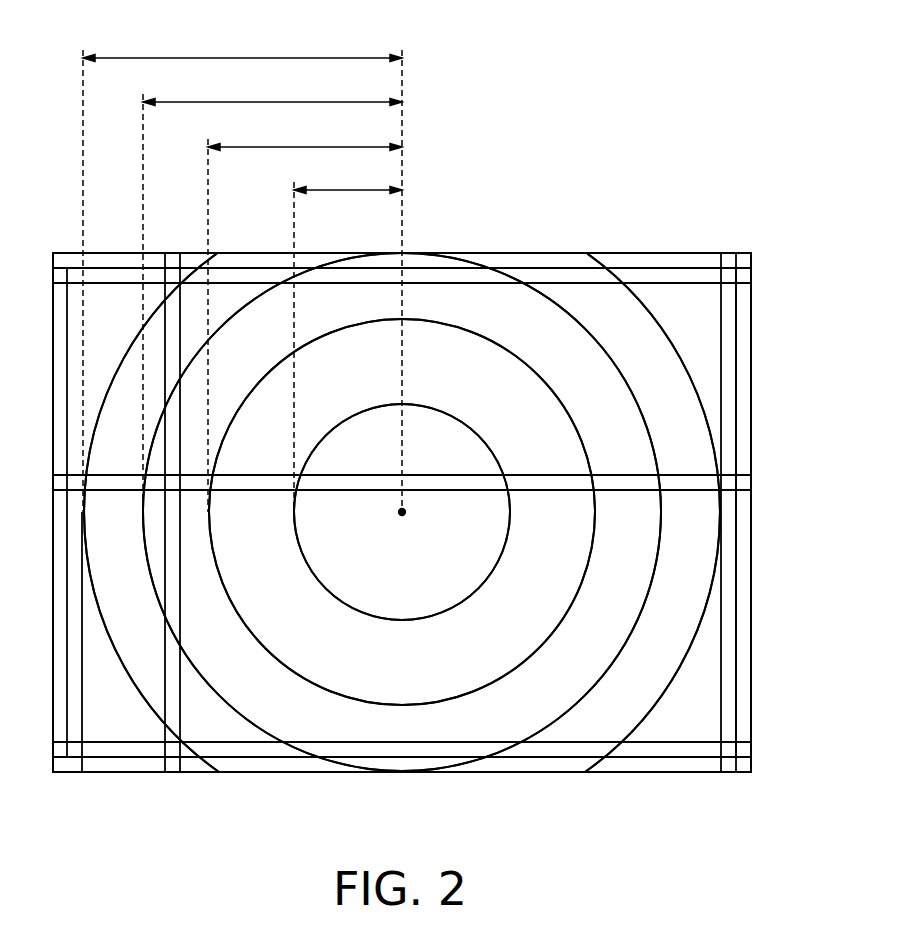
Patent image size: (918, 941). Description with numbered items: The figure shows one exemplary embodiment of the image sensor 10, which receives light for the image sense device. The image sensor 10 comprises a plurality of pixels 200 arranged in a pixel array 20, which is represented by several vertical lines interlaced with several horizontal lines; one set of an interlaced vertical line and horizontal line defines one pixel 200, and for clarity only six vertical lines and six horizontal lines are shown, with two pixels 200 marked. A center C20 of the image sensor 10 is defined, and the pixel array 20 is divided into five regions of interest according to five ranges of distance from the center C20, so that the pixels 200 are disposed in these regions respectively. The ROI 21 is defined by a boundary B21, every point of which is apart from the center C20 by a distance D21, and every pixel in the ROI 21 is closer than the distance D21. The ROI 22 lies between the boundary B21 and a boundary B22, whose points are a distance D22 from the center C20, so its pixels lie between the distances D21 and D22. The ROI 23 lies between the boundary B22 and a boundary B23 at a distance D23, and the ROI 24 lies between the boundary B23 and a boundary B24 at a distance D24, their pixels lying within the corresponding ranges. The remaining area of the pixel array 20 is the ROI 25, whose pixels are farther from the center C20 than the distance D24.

The image sensor 10 is at (749, 105).
The pixel array 20 is at (770, 302).
The pixel 200 is at (60, 262).
The ROI 21 is at (421, 578).
The ROI 22 is at (555, 578).
The ROI 23 is at (637, 578).
The ROI 24 is at (702, 578).
The ROI 25 is at (712, 719).
The boundary B21 is at (486, 447).
The boundary B22 is at (573, 412).
The boundary B23 is at (633, 391).
The boundary B24 is at (682, 349).
The center C20 is at (406, 514).
The distance D21 is at (348, 336).
The distance D22 is at (305, 314).
The distance D23 is at (272, 292).
The distance D24 is at (242, 270).